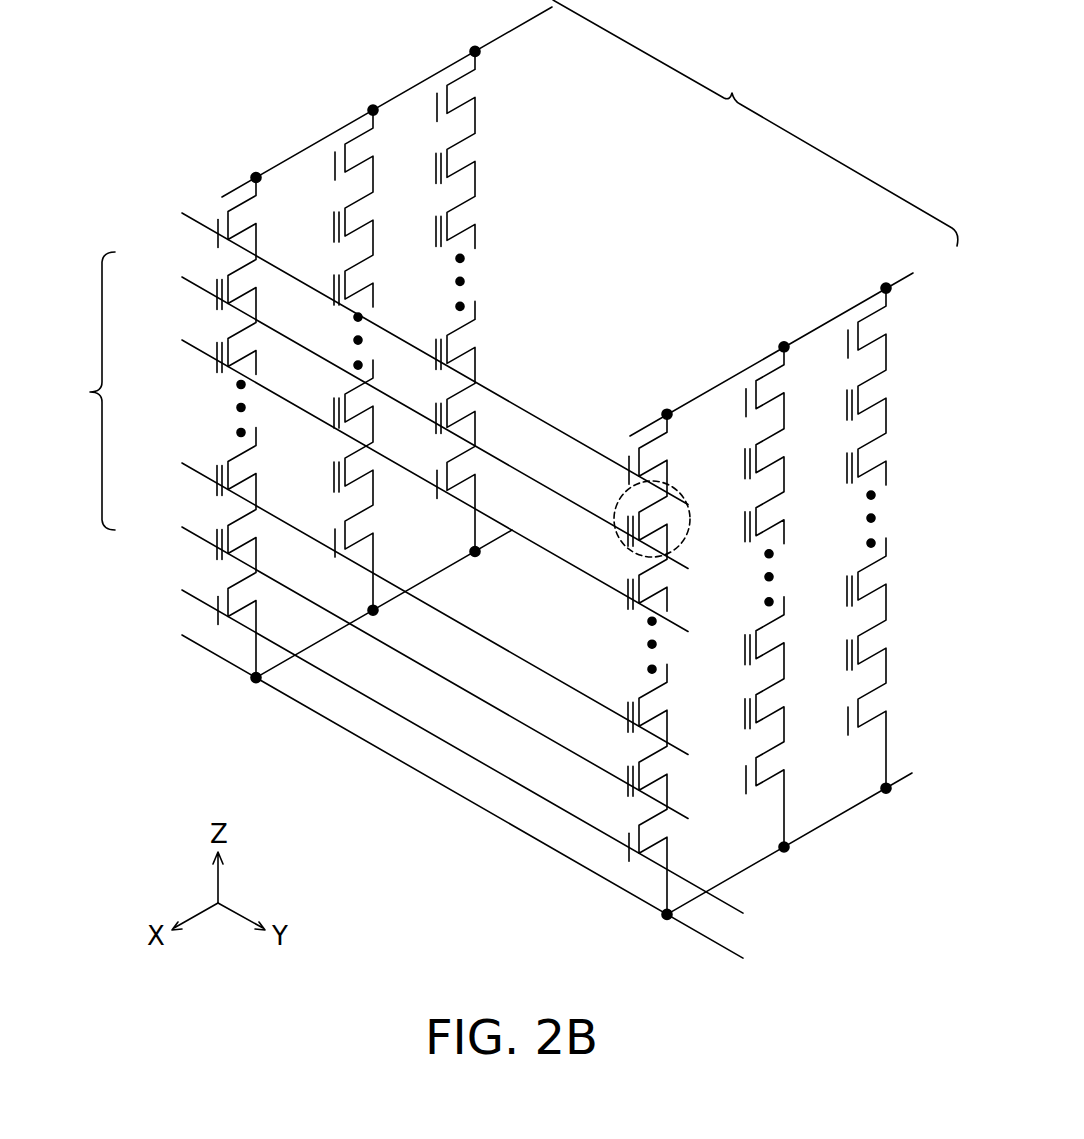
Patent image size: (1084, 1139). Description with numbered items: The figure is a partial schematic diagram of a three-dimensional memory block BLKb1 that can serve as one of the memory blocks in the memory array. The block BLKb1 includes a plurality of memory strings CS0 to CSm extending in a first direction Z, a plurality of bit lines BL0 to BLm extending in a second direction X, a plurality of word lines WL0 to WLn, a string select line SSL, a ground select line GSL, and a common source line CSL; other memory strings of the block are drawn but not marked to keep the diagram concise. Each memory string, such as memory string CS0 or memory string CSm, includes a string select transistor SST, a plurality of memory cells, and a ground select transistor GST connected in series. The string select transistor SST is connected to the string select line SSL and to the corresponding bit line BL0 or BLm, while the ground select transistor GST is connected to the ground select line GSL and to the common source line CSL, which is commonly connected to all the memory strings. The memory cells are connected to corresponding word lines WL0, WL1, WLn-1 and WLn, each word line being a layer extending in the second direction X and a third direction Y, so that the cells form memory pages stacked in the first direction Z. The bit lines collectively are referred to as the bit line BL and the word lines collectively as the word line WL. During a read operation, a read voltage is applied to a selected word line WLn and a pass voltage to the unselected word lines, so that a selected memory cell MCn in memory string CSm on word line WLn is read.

The 3D memory block BLKb1 is at (962, 963).
The memory string CS0 is at (255, 174).
The memory string CSm is at (666, 410).
The string select transistor SST is at (216, 208).
The ground select transistor GST is at (224, 640).
The memory cell MCn is at (684, 542).
The bit line BL0 is at (387, 100).
The bit line BLm is at (789, 340).
The bit line BL is at (755, 123).
The string select line SSL is at (406, 353).
The word line WLn is at (409, 411).
The word line WLn-1 is at (402, 475).
The word line WL1 is at (409, 598).
The word line WL0 is at (406, 660).
The word line WL is at (79, 391).
The ground select line GSL is at (432, 742).
The common source line CSL is at (432, 788).